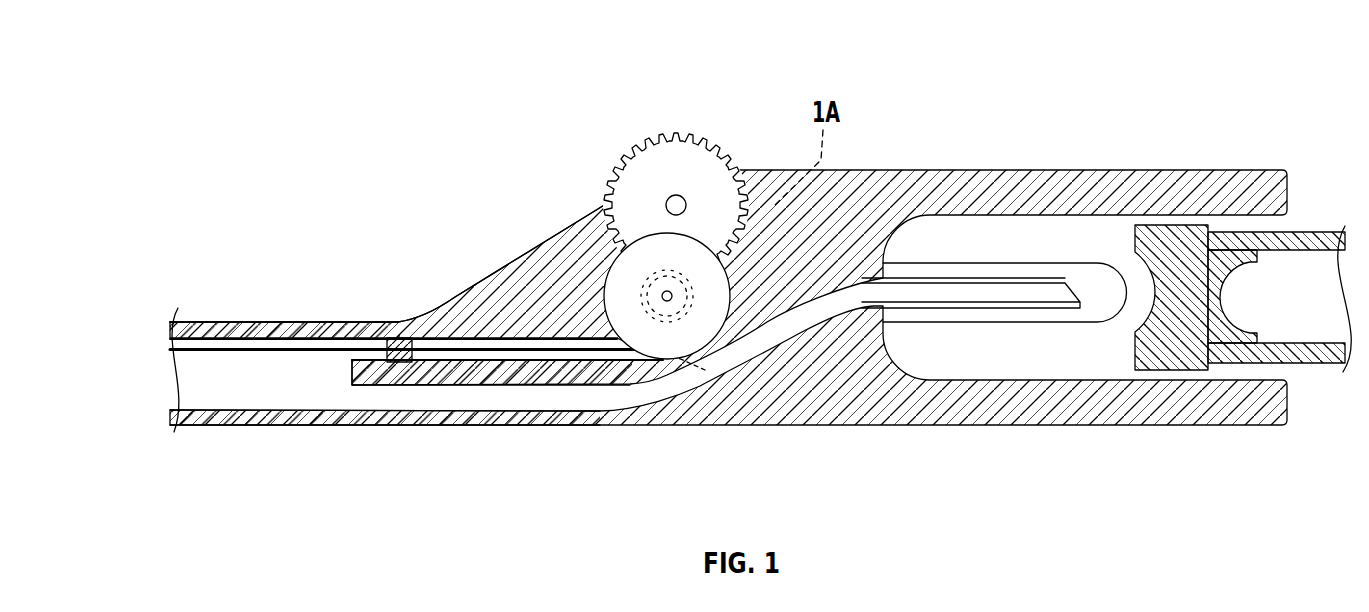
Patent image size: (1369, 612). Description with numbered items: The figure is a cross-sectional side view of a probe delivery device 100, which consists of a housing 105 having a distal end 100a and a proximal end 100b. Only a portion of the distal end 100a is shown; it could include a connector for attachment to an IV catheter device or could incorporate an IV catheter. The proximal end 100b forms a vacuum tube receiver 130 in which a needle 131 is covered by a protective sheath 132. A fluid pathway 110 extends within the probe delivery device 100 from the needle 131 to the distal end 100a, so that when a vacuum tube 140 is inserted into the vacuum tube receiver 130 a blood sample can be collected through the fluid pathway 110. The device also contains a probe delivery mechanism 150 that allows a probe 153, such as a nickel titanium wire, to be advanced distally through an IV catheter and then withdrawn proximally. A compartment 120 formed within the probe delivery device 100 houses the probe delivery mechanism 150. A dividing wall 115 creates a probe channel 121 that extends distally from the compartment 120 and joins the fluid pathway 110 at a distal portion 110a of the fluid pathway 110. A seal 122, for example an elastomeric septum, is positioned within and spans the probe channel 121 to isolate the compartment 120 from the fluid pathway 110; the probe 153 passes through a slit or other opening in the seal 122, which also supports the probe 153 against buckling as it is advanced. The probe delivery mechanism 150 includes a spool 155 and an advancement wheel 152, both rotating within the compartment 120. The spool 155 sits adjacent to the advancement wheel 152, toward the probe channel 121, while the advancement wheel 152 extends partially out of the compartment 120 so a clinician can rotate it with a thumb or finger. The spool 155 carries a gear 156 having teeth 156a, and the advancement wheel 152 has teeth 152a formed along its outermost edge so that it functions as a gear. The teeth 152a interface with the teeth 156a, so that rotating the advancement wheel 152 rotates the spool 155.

The probe delivery device 100 is at (190, 82).
The distal end 100a is at (185, 305).
The proximal end 100b is at (1281, 445).
The housing 105 is at (728, 312).
The fluid pathway 110 is at (565, 395).
The distal portion 110a is at (205, 392).
The dividing wall 115 is at (455, 372).
The compartment 120 is at (603, 268).
The probe channel 121 is at (470, 345).
The seal 122 is at (400, 340).
The vacuum tube receiver 130 is at (987, 345).
The needle 131 is at (990, 277).
The protective sheath 132 is at (1050, 262).
The vacuum tube 140 is at (1327, 193).
The probe delivery mechanism 150 is at (657, 171).
The advancement wheel 152 is at (752, 212).
The teeth 152a is at (598, 186).
The probe 153 is at (290, 346).
The spool 155 is at (705, 315).
The gear 156 is at (666, 318).
The teeth 156a is at (667, 296).